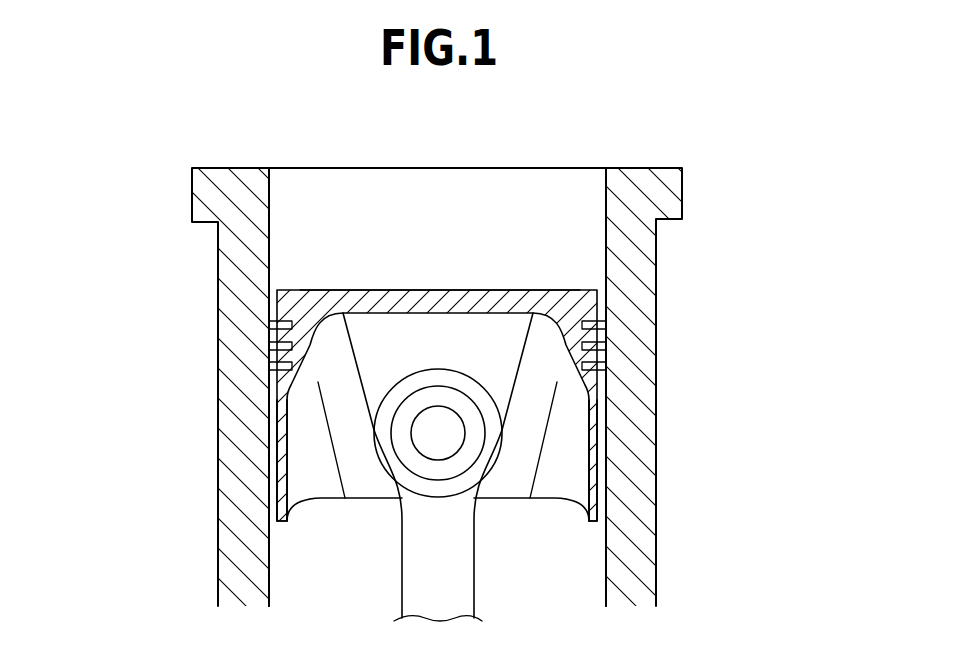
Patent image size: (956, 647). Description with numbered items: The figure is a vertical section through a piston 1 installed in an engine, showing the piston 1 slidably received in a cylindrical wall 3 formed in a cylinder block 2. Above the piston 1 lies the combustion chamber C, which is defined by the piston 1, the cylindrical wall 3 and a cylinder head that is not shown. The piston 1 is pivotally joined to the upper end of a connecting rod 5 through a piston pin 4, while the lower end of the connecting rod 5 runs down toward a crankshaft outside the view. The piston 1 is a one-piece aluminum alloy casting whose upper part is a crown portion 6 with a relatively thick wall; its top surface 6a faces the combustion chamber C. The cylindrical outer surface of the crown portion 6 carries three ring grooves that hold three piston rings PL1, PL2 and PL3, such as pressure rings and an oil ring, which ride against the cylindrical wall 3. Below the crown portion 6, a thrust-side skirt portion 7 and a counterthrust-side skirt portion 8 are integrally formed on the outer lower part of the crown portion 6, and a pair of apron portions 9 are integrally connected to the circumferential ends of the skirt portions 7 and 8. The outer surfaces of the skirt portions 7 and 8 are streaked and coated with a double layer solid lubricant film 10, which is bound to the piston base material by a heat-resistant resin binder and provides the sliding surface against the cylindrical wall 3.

The piston 1 is at (436, 399).
The cylinder block 2 is at (636, 536).
The cylindrical wall 3 is at (603, 428).
The piston pin 4 is at (465, 455).
The connecting rod 5 is at (410, 590).
The crown portion 6 is at (361, 298).
The top surface 6a is at (428, 291).
The thrust-side skirt portion 7 is at (276, 449).
The counterthrust-side skirt portion 8 is at (594, 470).
The apron portion 9 is at (357, 478).
The double layer solid lubricant film 10 is at (436, 460).
The piston ring PL1 is at (594, 325).
The piston ring PL2 is at (594, 346).
The piston ring PL3 is at (594, 366).
The combustion chamber C is at (488, 188).